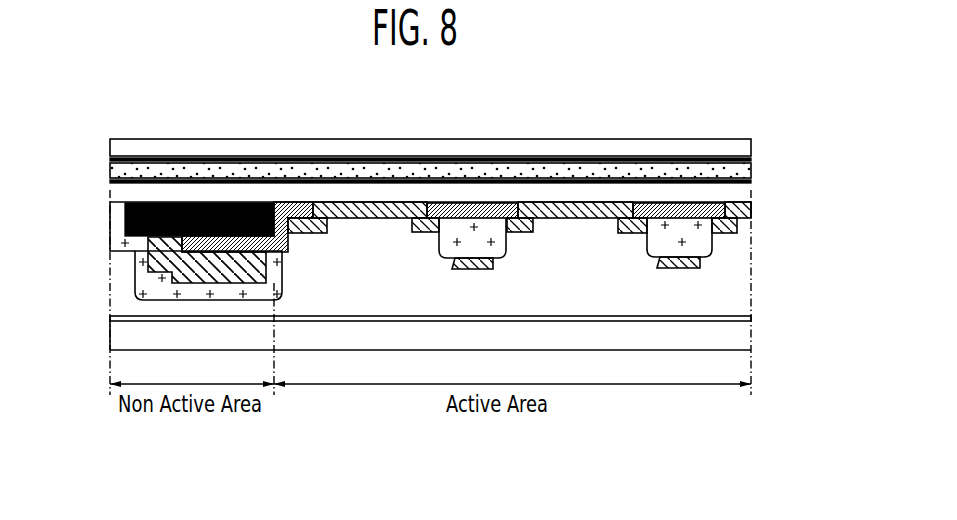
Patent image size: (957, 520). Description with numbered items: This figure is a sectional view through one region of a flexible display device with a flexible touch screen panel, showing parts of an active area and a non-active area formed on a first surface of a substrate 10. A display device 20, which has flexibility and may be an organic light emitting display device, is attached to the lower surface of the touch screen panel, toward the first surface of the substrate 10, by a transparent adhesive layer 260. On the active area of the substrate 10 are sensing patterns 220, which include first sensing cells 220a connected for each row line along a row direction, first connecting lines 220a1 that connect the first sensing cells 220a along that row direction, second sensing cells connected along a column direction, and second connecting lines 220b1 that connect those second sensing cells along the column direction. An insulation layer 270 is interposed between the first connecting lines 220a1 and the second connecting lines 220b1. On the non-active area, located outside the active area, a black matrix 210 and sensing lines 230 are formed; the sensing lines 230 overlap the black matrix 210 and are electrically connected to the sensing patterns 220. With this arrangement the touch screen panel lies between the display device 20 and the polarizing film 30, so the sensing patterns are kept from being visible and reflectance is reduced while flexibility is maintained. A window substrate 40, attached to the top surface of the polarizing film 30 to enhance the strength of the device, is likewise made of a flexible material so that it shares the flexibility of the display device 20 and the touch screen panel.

The window substrate 40 is at (122, 145).
The transparent adhesive layer 260 is at (112, 158).
The polarizing film 30 is at (112, 172).
The substrate 10 is at (120, 193).
The black matrix 210 is at (113, 228).
The sensing patterns 220 is at (536, 238).
The first connecting lines 220a1 is at (718, 213).
The first sensing cells 220a is at (733, 224).
The second connecting lines 220b1 is at (700, 262).
The sensing lines 230 is at (137, 250).
The insulation layer 270 is at (147, 282).
The display device 20 is at (118, 343).